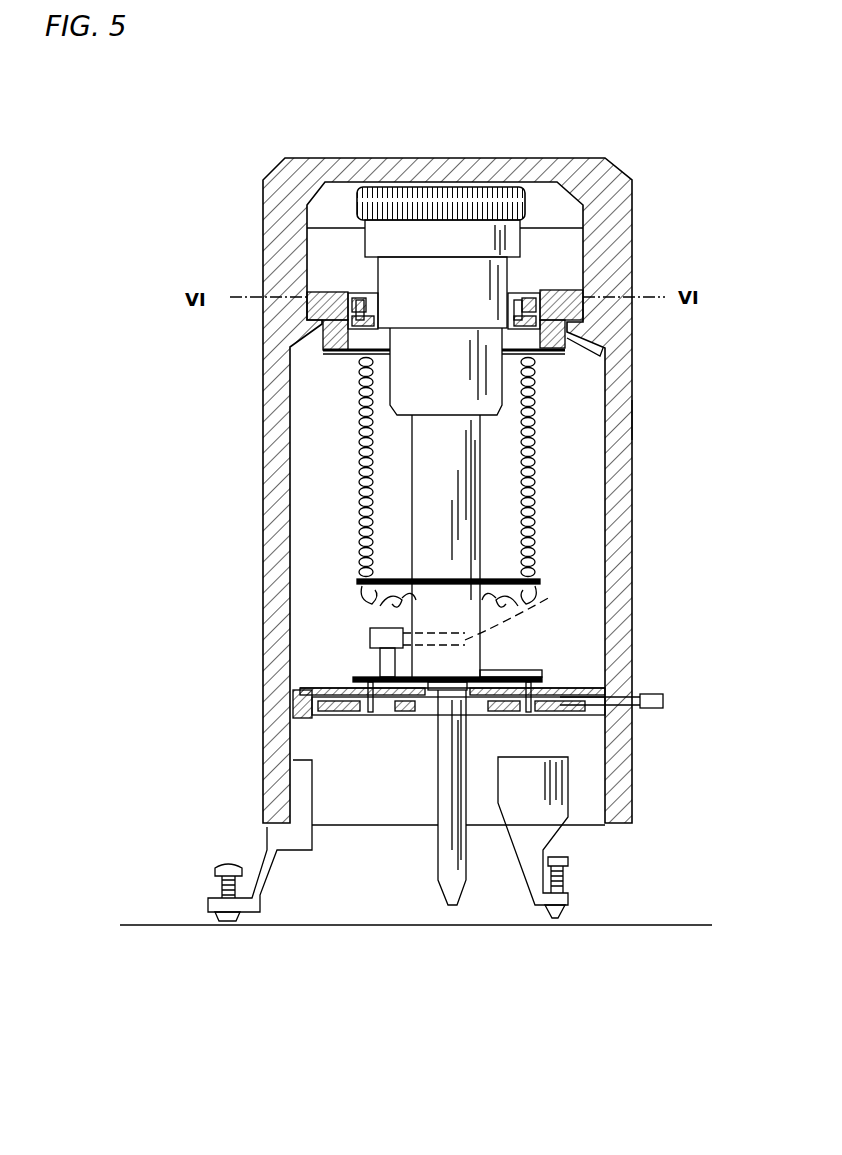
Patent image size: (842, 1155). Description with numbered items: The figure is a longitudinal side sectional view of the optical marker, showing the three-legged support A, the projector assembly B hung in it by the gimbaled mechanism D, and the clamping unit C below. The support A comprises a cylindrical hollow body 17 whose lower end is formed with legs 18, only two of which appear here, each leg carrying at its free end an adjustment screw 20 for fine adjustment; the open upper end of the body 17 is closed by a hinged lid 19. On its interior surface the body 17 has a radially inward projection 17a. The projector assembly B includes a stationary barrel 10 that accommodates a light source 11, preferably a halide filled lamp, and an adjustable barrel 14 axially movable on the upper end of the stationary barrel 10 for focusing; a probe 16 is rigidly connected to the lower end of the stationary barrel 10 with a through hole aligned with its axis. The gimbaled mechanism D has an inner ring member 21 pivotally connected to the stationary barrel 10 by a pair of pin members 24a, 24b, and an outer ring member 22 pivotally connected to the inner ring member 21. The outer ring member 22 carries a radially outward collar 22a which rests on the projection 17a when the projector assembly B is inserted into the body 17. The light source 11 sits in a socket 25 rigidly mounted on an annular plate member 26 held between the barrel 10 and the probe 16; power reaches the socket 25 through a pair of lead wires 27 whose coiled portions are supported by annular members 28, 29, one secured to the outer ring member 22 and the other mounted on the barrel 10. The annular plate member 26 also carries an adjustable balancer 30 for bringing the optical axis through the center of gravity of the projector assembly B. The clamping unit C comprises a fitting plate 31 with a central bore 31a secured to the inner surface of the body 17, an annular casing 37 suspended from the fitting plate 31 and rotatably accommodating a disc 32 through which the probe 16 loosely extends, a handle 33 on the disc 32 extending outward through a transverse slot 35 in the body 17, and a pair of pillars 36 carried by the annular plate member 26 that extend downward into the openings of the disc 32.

The stationary barrel 10 is at (470, 500).
The light source 11 is at (553, 598).
The adjustable barrel 14 is at (512, 192).
The probe 16 is at (438, 874).
The cylindrical hollow body 17 is at (270, 586).
The projection 17a is at (585, 340).
The legs 18 is at (262, 886).
The lid 19 is at (372, 162).
The adjustment screw 20 is at (220, 868).
The inner ring member 21 is at (357, 292).
The outer ring member 22 is at (325, 300).
The collar 22a is at (565, 298).
The pin member 24a is at (347, 318).
The pin member 24b is at (548, 312).
The socket 25 is at (380, 638).
The annular plate member 26 is at (372, 684).
The lead wires 27 is at (532, 466).
The annular member 28 is at (347, 348).
The annular member 29 is at (368, 578).
The adjustable balancer 30 is at (541, 676).
The fitting plate 31 is at (598, 679).
The central bore 31a is at (537, 671).
The disc 32 is at (338, 704).
The handle 33 is at (665, 702).
The transverse slot 35 is at (594, 711).
The pillars 36 is at (378, 704).
The annular shaped casing 37 is at (300, 710).
The support A is at (638, 427).
The projector assembly B is at (492, 553).
The clamping unit C is at (590, 720).
The gimbaled mechanism D is at (542, 280).